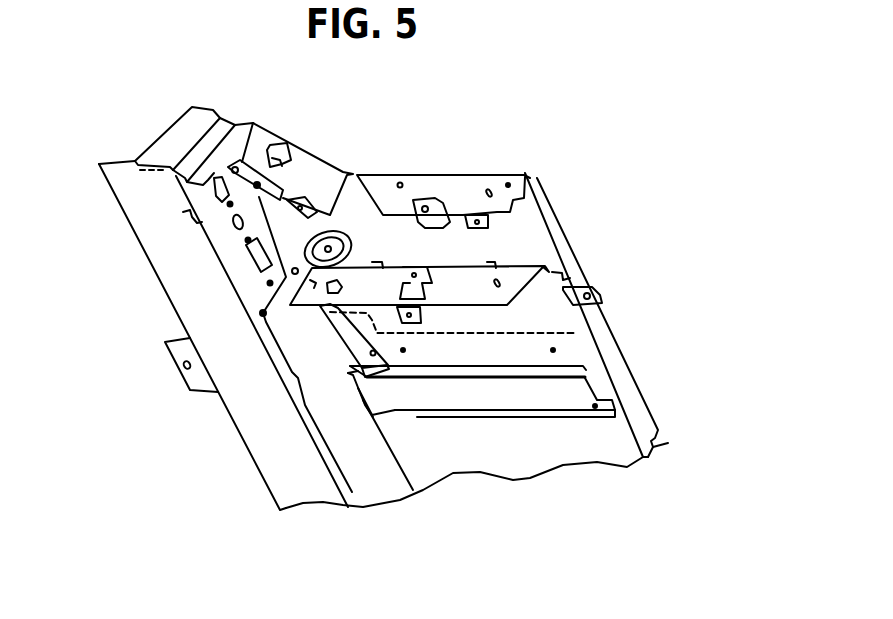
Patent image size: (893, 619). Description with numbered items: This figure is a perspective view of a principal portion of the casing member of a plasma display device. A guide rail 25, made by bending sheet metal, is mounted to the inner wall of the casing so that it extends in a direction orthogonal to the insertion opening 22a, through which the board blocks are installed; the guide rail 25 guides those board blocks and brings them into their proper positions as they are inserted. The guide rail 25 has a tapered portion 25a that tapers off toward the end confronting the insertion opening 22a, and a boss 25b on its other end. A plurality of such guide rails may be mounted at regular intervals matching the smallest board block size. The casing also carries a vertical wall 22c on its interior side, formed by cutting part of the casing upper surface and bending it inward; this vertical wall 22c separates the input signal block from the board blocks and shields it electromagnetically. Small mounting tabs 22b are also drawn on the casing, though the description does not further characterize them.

The insertion opening 22a is at (317, 395).
The mounting tab 22b is at (432, 190).
The vertical wall 22c is at (478, 278).
The guide rail 25 is at (585, 400).
The tapered portion 25a is at (388, 398).
The boss 25b is at (588, 366).